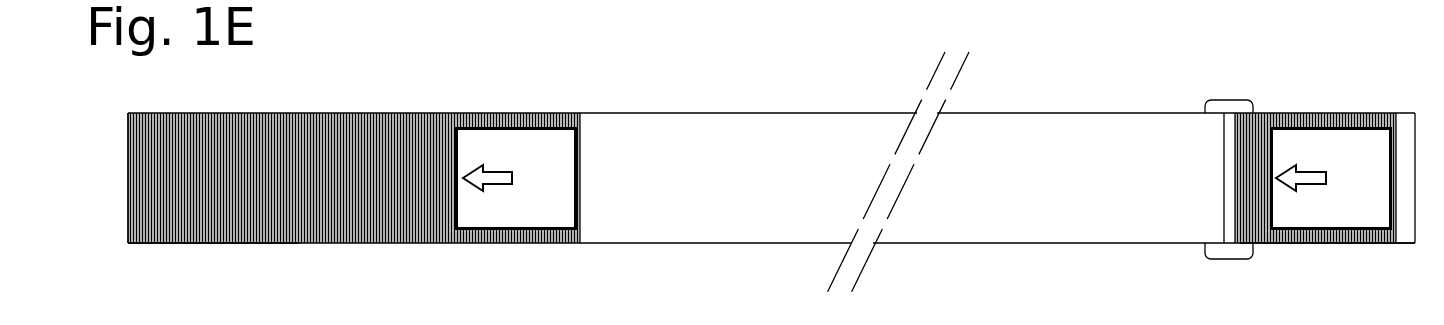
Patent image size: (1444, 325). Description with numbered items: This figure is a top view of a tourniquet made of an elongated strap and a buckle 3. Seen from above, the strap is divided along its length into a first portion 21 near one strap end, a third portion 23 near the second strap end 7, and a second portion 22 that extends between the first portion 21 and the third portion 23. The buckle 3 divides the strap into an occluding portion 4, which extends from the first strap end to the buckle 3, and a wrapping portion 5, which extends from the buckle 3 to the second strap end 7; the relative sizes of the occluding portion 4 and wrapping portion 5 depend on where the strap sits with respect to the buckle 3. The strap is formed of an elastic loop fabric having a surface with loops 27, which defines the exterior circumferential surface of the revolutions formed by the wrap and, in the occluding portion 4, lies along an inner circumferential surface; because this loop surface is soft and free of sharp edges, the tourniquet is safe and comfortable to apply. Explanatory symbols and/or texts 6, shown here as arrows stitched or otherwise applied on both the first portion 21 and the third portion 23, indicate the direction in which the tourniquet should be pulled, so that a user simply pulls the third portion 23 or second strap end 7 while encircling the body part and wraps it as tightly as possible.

The buckle 3 is at (1228, 105).
The occluding portion 4 is at (1335, 260).
The wrapping portion 5 is at (182, 262).
The explanatory symbols and/or texts 6 is at (510, 138).
The second strap end 7 is at (128, 165).
The first portion 21 is at (1337, 117).
The second portion 22 is at (1070, 128).
The third portion 23 is at (352, 128).
The surface with loops 27 is at (724, 133).